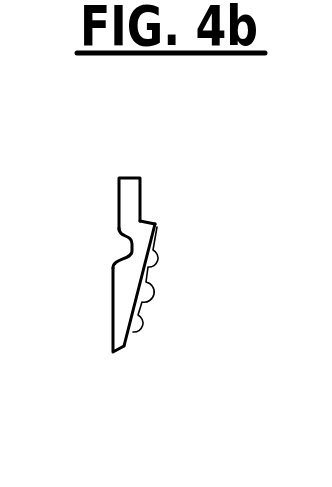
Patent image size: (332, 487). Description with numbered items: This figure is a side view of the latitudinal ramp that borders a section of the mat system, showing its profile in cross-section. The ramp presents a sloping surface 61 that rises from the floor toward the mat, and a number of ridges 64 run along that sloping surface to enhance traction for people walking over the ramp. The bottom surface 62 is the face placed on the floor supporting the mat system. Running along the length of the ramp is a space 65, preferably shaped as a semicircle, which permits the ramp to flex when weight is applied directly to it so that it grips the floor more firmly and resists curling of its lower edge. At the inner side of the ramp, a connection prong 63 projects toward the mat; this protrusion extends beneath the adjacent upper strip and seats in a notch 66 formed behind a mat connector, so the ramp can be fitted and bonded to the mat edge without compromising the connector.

The sloping surface 61 is at (142, 302).
The bottom surface 62 is at (113, 312).
The connection prong 63 is at (130, 177).
The ridges 64 is at (157, 256).
The space 65 is at (125, 246).
The notch 66 is at (142, 222).